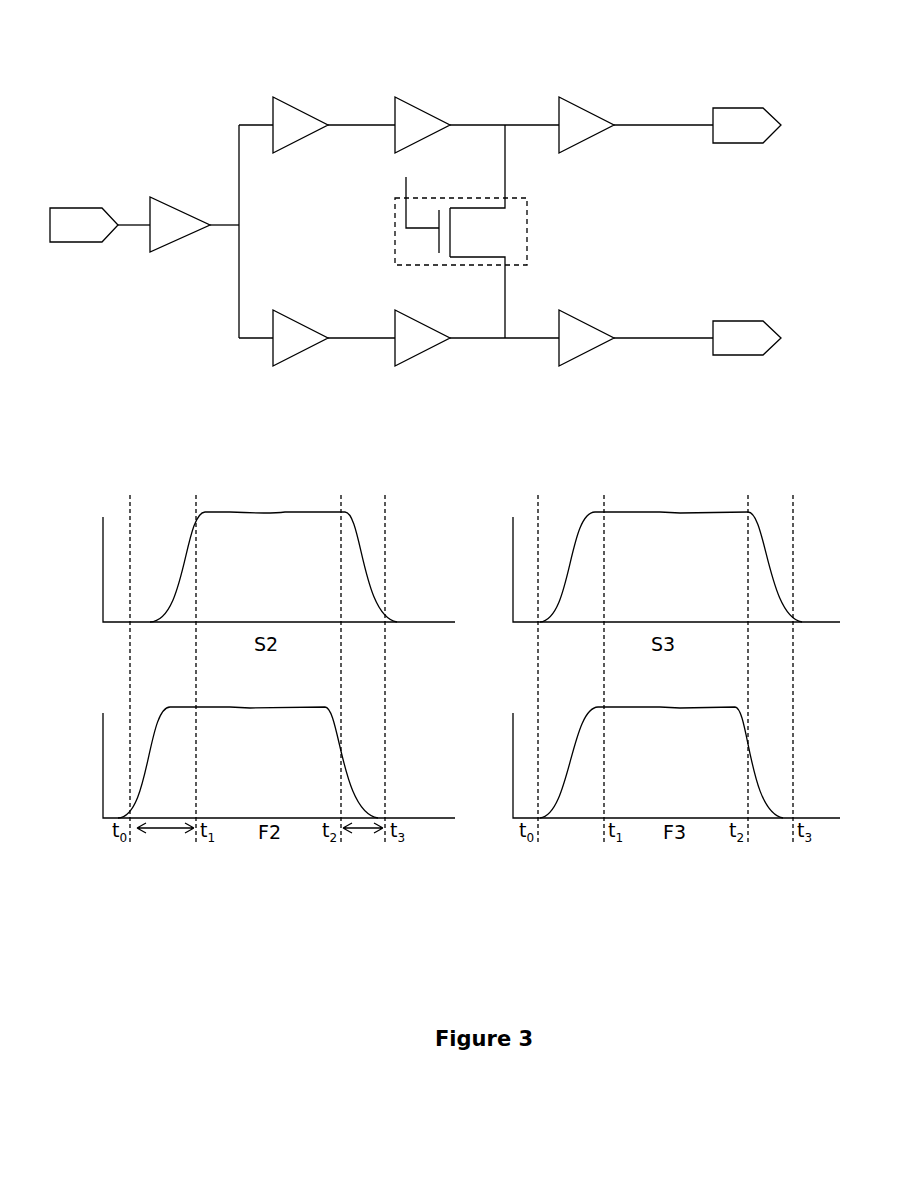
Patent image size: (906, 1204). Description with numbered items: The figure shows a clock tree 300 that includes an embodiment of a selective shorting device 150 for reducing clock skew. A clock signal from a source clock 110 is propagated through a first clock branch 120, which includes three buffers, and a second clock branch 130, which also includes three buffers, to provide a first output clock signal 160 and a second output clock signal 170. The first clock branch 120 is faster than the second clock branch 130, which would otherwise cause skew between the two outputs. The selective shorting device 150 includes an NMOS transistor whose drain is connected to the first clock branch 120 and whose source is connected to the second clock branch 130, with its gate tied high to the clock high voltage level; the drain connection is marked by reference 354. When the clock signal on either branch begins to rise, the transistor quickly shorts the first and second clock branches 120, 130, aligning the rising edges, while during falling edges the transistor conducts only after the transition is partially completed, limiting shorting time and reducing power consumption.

The clock tree 300 is at (519, 61).
The source clock 110 is at (75, 244).
The first clock branch 120 is at (368, 84).
The second clock branch 130 is at (373, 356).
The selective shorting device 150 is at (527, 232).
The drain connection node 354 is at (498, 206).
The first output clock signal 160 is at (738, 145).
The second output clock signal 170 is at (740, 356).